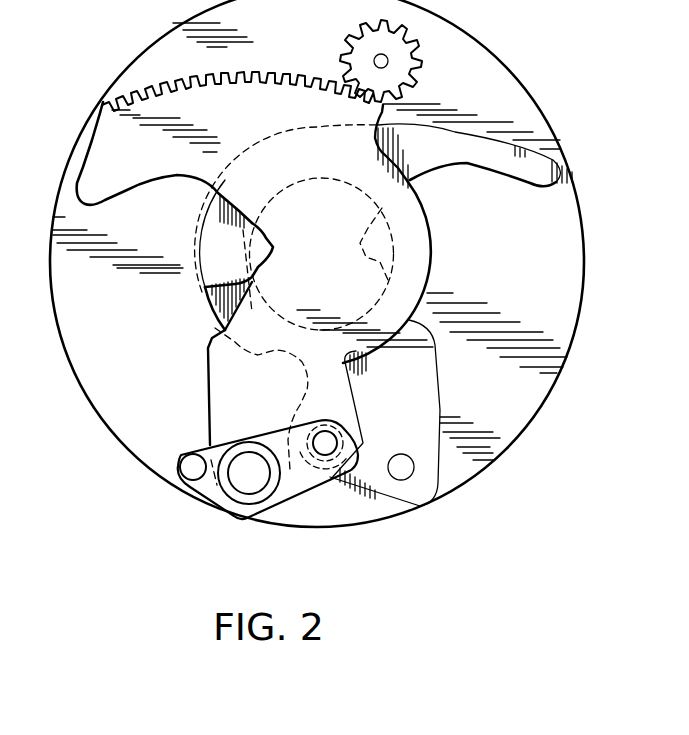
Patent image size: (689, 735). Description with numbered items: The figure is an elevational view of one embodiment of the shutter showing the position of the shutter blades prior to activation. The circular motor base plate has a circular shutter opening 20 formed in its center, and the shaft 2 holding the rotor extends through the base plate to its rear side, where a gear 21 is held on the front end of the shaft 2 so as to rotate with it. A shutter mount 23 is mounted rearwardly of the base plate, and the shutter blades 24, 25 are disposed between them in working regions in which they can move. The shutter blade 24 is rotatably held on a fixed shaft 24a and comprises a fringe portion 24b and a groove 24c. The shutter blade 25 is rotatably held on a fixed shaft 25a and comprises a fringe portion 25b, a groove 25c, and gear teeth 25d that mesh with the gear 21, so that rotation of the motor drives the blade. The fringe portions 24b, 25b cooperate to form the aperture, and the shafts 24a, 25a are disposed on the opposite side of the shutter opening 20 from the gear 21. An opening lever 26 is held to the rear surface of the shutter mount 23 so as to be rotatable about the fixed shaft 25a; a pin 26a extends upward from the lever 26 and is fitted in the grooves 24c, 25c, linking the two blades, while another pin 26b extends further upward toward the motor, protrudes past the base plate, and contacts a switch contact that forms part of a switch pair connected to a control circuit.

The shaft 2 is at (353, 63).
The circular shutter opening 20 is at (242, 235).
The gear 21 is at (390, 66).
The shutter mount 23 is at (120, 413).
The shutter blade 24 is at (457, 135).
The fixed shaft 24a is at (406, 478).
The fringe portion 24b is at (433, 258).
The groove 24c is at (364, 450).
The shutter blade 25 is at (97, 162).
The fixed shaft 25a is at (247, 466).
The fringe portion 25b is at (212, 287).
The groove 25c is at (284, 387).
The gear teeth 25d is at (226, 80).
The opening lever 26 is at (205, 483).
The pin 26a is at (324, 442).
The pin 26b is at (193, 472).